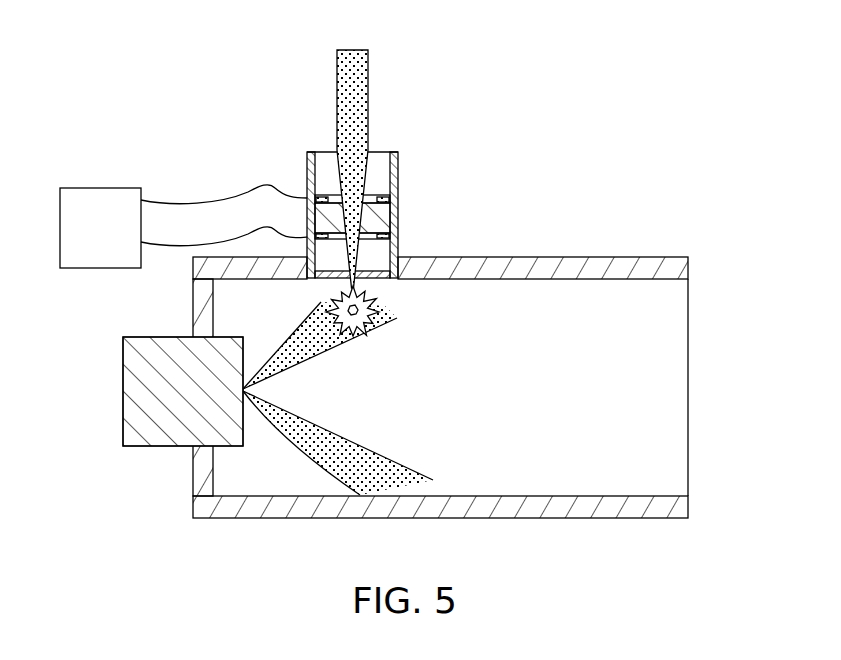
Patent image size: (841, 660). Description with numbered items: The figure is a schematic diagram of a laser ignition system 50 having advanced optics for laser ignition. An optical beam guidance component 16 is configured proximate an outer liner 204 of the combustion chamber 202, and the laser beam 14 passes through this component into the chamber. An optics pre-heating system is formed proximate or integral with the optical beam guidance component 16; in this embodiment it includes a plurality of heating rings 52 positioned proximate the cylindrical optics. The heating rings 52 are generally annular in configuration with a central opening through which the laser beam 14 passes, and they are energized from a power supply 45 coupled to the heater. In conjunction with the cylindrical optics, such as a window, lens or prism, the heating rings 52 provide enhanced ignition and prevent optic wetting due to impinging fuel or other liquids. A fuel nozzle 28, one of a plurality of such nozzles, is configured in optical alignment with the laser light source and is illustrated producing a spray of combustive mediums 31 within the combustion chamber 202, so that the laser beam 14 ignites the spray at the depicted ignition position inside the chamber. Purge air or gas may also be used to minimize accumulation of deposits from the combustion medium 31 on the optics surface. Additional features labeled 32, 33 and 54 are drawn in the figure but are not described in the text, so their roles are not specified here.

The laser beam 14 is at (362, 72).
The optical beam guidance component 16 is at (416, 217).
The fuel nozzle 28 is at (123, 393).
The spray of combustive mediums 31 is at (385, 468).
The plasma spark 32 is at (362, 337).
The focused beam 33 is at (356, 349).
The power supply 45 is at (100, 188).
The laser ignition system 50 is at (571, 130).
The heating rings 52 is at (378, 195).
The insulators 54 is at (335, 197).
The combustion chamber 202 is at (603, 405).
The outer liner 204 is at (618, 257).